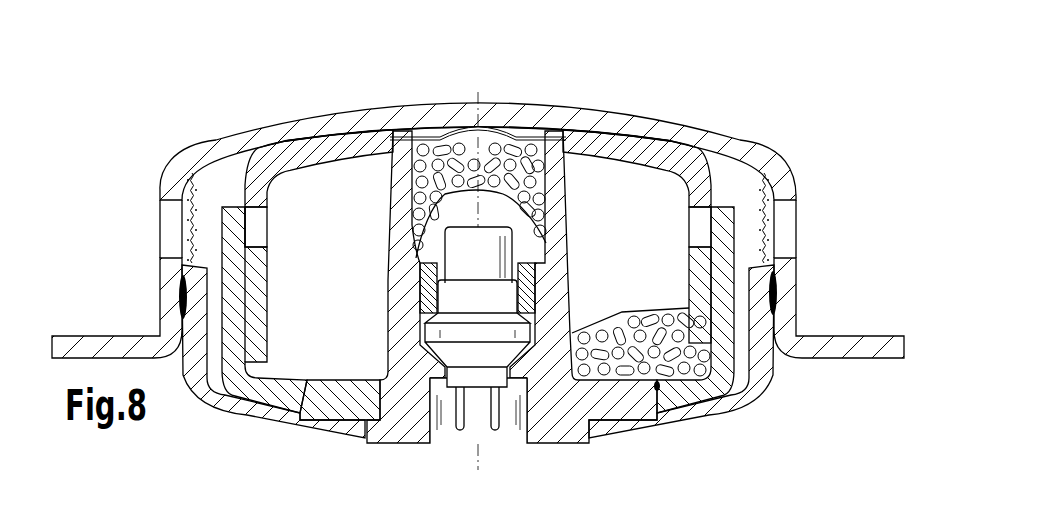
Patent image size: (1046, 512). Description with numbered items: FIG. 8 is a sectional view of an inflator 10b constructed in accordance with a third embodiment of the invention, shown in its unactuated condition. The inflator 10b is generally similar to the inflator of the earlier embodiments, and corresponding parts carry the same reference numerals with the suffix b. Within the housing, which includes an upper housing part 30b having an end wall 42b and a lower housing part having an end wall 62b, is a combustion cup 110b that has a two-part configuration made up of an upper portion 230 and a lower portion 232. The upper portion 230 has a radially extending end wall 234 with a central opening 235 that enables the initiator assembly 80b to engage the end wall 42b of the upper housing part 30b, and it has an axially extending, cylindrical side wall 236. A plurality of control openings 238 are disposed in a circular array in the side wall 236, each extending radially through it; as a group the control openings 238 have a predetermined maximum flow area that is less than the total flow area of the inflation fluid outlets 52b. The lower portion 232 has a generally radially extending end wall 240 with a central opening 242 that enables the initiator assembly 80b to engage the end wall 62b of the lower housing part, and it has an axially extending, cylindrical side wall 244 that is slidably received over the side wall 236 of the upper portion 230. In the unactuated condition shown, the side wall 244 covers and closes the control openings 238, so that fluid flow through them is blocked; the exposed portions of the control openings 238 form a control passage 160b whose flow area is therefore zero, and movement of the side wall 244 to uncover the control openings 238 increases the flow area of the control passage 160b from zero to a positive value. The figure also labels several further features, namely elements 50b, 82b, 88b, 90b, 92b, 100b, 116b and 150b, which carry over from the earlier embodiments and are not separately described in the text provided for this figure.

The inflator 10b is at (136, 152).
The upper housing part 30b is at (334, 102).
The end wall of the upper housing part 42b is at (405, 118).
The central axis 50b is at (483, 462).
The inflation fluid outlets 52b is at (170, 228).
The end wall of the lower housing part 62b is at (333, 422).
The initiator assembly 80b is at (441, 452).
The sensor wall 82b is at (378, 212).
The retaining ring 88b is at (327, 398).
The gap 90b is at (530, 243).
The plunger 92b is at (436, 218).
The granular fill material 100b is at (505, 130).
The combustion cup 110b is at (280, 311).
The granular fill pocket 116b is at (589, 304).
The weld joint 150b is at (768, 237).
The control passage 160b is at (231, 182).
The upper portion of the combustion cup 230 is at (715, 156).
The lower portion of the combustion cup 232 is at (749, 364).
The end wall of the upper portion 234 is at (642, 150).
The central opening 235 is at (570, 118).
The side wall of the upper portion 236 is at (698, 347).
The control openings 238 is at (257, 227).
The end wall of the lower portion 240 is at (716, 395).
The central opening 242 is at (653, 392).
The side wall of the lower portion 244 is at (721, 222).